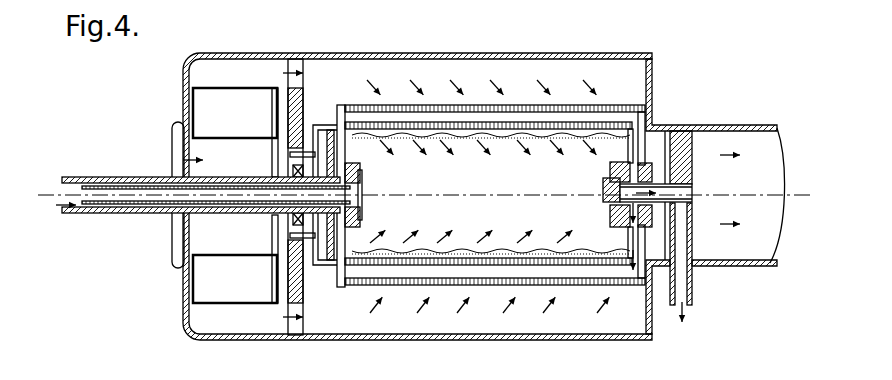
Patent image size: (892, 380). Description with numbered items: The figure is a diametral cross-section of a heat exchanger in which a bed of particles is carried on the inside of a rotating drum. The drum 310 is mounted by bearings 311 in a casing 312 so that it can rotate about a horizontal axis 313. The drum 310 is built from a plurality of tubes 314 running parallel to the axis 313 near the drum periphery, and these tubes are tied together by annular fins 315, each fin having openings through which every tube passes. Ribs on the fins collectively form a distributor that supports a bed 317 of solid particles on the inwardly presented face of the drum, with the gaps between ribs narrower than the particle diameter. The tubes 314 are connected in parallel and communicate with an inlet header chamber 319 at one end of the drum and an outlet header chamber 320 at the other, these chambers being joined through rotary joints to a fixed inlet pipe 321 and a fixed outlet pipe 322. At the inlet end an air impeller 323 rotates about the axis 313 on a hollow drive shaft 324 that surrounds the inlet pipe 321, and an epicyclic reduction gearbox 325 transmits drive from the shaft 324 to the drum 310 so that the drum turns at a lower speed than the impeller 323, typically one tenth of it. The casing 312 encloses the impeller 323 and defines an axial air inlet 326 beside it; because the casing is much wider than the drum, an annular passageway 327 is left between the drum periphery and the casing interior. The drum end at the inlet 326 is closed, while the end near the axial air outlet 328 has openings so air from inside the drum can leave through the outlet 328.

The drum 310 is at (506, 149).
The bearings 311 is at (352, 165).
The casing 312 is at (470, 53).
The axis 313 is at (533, 197).
The tubes 314 is at (575, 110).
The fins 315 is at (605, 100).
The bed 317 is at (500, 133).
The inlet header chamber 319 is at (340, 117).
The outlet header chamber 320 is at (652, 121).
The inlet pipe 321 is at (130, 155).
The outlet pipe 322 is at (692, 293).
The air impeller 323 is at (208, 106).
The hollow drive shaft 324 is at (173, 160).
The epicyclic reduction gearbox 325 is at (294, 121).
The axial air inlet 326 is at (175, 253).
The annular passageway 327 is at (485, 320).
The air outlet 328 is at (743, 267).